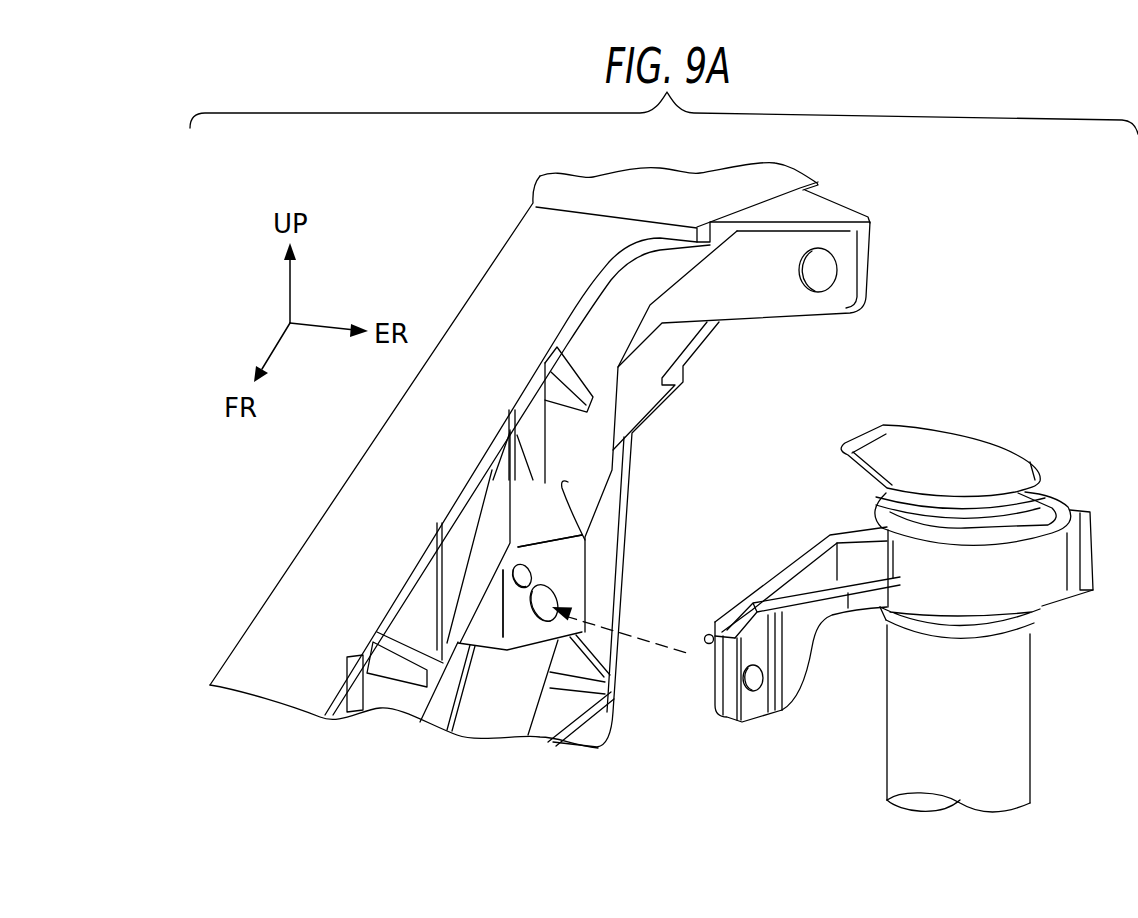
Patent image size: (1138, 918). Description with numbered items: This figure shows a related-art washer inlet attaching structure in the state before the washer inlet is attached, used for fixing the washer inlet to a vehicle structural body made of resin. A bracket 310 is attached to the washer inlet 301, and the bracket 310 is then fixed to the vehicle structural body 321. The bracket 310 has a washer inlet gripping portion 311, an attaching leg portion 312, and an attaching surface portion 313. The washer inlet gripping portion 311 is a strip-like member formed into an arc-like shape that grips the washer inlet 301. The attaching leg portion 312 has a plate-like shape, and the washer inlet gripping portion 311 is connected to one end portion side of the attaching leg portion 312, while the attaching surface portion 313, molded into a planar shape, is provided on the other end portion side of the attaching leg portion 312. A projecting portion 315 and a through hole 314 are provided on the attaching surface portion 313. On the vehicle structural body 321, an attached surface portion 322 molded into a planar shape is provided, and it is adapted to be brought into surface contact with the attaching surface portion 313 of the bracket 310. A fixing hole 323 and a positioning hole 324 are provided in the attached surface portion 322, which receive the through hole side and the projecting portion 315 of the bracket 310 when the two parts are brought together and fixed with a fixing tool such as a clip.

The washer inlet 301 is at (1005, 698).
The bracket 310 is at (722, 443).
The washer inlet gripping portion 311 is at (877, 502).
The attaching leg portion 312 is at (807, 548).
The attaching surface portion 313 is at (720, 622).
The through hole 314 is at (758, 688).
The projecting portion 315 is at (705, 635).
The vehicle structural body 321 is at (437, 321).
The attached surface portion 322 is at (520, 637).
The fixing hole 323 is at (546, 623).
The positioning hole 324 is at (522, 590).